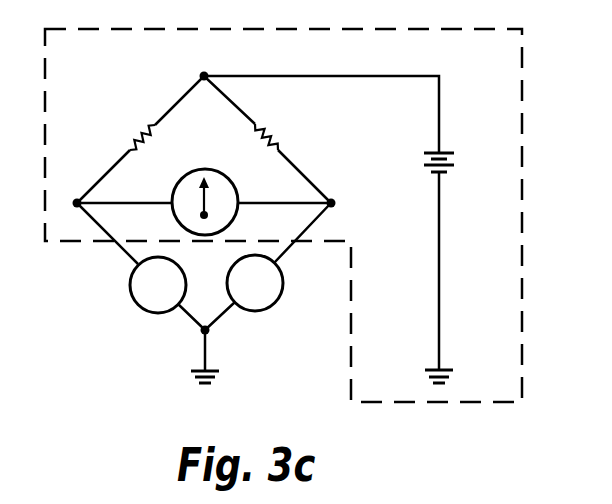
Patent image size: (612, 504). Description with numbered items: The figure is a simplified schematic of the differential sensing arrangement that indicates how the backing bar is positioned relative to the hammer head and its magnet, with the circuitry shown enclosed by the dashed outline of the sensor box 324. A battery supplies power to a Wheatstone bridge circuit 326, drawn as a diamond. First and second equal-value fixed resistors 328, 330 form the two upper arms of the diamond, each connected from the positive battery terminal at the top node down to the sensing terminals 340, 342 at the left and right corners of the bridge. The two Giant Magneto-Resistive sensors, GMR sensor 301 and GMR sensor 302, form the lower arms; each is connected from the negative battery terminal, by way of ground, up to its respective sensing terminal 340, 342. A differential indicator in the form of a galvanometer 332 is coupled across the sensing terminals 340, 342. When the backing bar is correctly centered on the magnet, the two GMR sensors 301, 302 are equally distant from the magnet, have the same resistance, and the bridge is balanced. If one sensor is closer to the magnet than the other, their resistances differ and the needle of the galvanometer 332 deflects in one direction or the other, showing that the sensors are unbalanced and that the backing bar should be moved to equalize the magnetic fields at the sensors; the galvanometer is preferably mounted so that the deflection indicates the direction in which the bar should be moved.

The sensor box 324 is at (522, 191).
The Wheatstone bridge circuit 326 is at (210, 135).
The first fixed resistor 328 is at (143, 130).
The second fixed resistor 330 is at (268, 128).
The galvanometer 332 is at (205, 168).
The first sensing terminal 340 is at (78, 198).
The second sensing terminal 342 is at (335, 197).
The GMR magnetic sensor 301 is at (131, 288).
The GMR magnetic sensor 302 is at (282, 298).